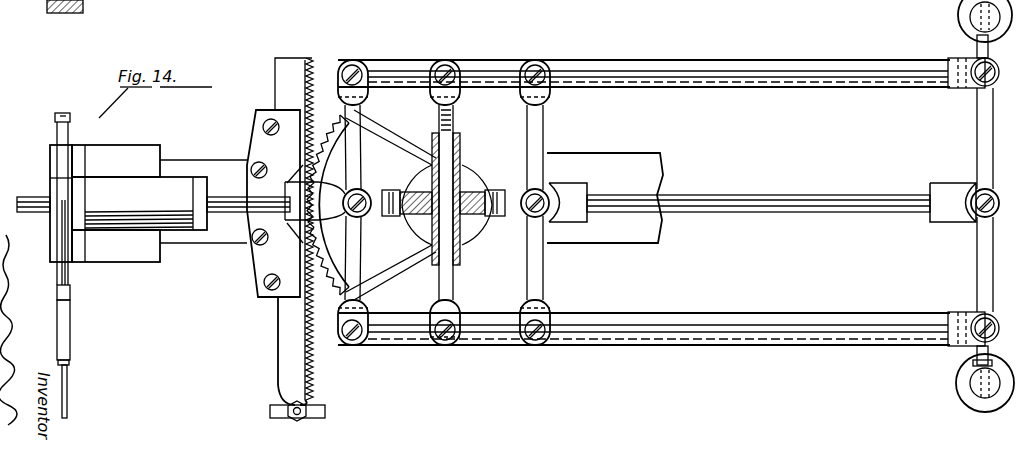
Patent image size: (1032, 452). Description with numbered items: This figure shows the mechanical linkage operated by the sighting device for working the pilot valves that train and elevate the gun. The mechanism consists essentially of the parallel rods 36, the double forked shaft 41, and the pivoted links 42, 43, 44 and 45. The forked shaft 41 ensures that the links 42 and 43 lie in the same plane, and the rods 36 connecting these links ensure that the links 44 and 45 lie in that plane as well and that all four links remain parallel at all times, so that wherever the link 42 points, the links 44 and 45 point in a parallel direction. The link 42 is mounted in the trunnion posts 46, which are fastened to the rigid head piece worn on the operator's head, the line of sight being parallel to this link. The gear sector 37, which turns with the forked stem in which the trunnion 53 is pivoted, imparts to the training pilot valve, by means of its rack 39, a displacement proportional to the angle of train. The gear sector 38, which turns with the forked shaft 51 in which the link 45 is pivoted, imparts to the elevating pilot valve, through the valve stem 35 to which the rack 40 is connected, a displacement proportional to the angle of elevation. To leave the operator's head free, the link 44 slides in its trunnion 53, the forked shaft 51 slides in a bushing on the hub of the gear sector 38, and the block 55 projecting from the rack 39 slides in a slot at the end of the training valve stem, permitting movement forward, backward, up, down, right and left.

The valve stem 35 is at (70, 386).
The parallel rods 36 is at (757, 62).
The gear sector 37 is at (398, 303).
The gear sector 38 is at (58, 132).
The rack 39 is at (280, 343).
The rack 40 is at (72, 328).
The double forked shaft 41 is at (833, 193).
The link 42 is at (978, 268).
The link 43 is at (541, 131).
The link 44 is at (455, 131).
The link 45 is at (363, 163).
The trunnion posts 46 is at (966, 20).
The forked shaft 51 is at (218, 195).
The trunnion 53 is at (460, 238).
The block 55 is at (318, 410).